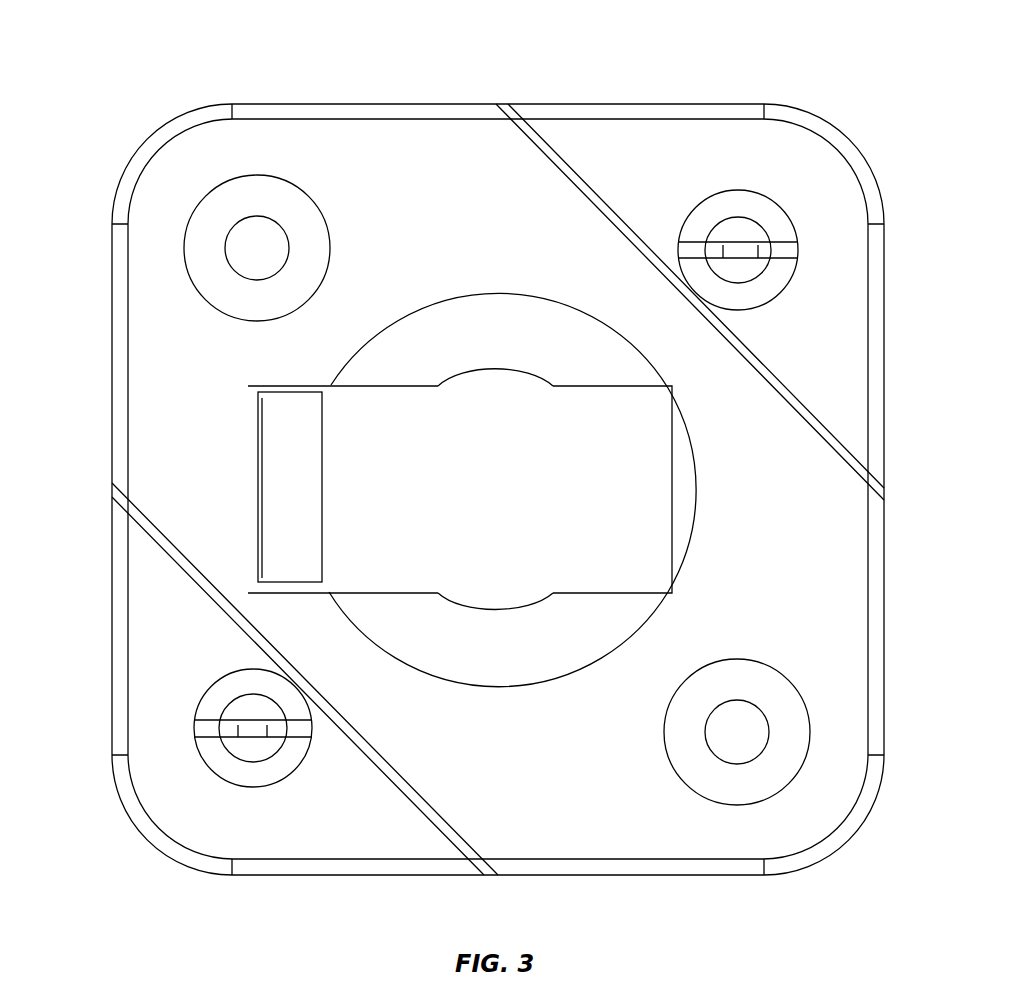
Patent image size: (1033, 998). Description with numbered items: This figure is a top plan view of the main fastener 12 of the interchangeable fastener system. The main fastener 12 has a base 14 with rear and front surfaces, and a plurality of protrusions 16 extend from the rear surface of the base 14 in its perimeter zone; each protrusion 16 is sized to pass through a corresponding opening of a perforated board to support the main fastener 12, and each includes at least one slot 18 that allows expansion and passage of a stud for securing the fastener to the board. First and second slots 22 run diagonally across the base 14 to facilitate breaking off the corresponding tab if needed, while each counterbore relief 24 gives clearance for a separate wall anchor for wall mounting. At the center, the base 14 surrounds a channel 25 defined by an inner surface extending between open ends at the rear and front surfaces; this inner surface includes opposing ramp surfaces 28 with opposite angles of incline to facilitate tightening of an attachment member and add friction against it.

The main fastener 12 is at (690, 80).
The base 14 is at (111, 437).
The protrusions 16 is at (749, 199).
The slot 18 is at (763, 253).
The first and second slots 22 is at (845, 455).
The counterbore relief 24 is at (258, 197).
The channel 25 is at (516, 506).
The opposing ramp surfaces 28 is at (478, 345).